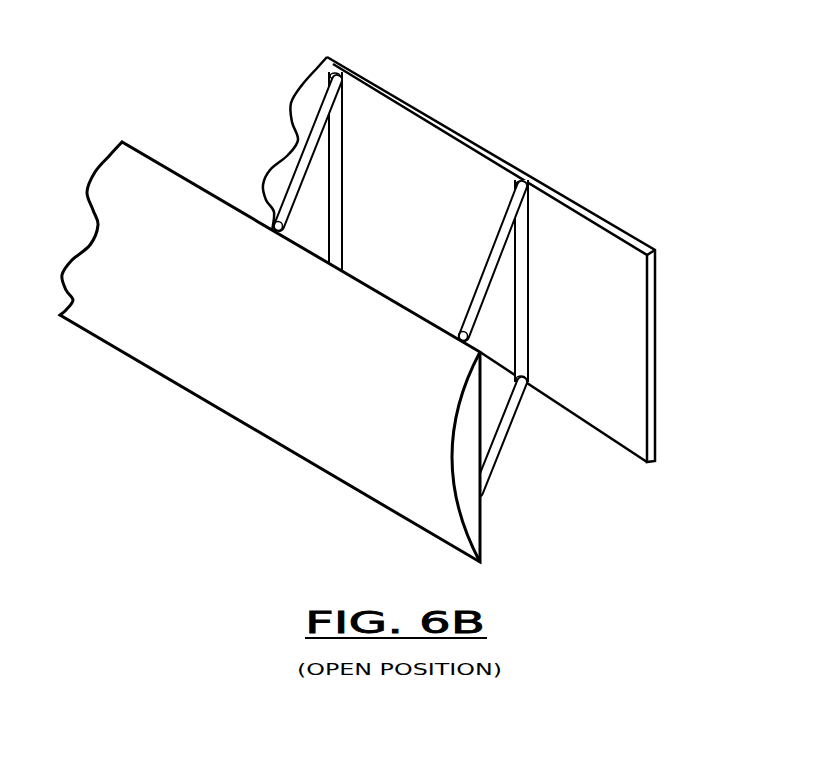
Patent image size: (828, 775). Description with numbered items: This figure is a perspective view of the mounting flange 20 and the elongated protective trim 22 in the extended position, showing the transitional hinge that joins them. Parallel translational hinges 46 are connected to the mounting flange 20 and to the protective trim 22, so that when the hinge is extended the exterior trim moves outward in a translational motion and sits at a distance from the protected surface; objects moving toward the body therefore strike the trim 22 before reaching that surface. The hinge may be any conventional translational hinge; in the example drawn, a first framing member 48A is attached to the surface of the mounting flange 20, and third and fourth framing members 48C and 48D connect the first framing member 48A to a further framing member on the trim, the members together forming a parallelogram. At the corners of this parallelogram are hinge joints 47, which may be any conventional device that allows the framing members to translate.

The mounting flange 20 is at (445, 121).
The protective trim 22 is at (250, 430).
The translational hinge 46 is at (492, 475).
The hinge joint 47 is at (533, 183).
The first framing member 48A is at (532, 293).
The third framing member 48C is at (483, 273).
The fourth framing member 48D is at (495, 430).